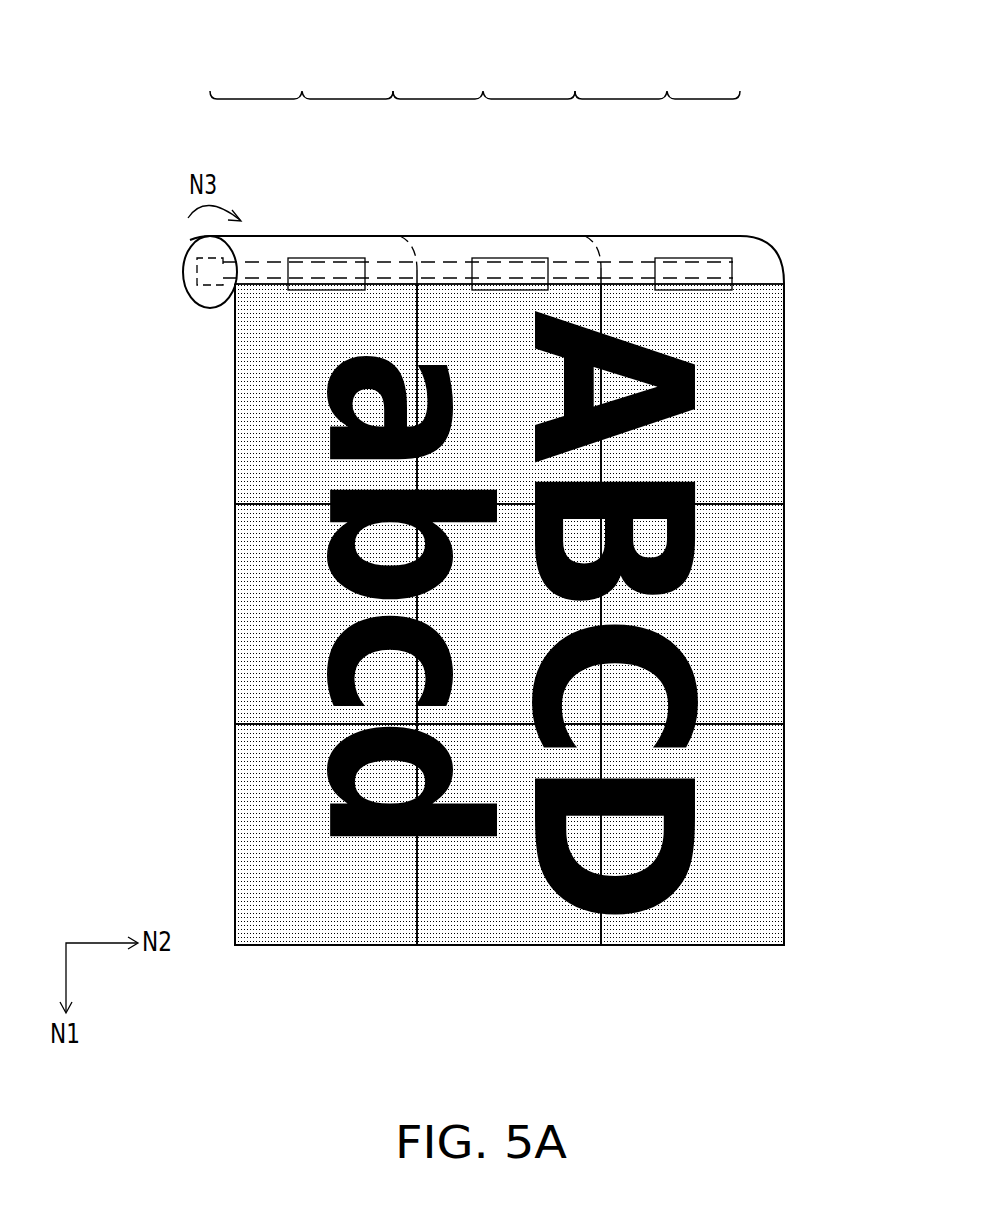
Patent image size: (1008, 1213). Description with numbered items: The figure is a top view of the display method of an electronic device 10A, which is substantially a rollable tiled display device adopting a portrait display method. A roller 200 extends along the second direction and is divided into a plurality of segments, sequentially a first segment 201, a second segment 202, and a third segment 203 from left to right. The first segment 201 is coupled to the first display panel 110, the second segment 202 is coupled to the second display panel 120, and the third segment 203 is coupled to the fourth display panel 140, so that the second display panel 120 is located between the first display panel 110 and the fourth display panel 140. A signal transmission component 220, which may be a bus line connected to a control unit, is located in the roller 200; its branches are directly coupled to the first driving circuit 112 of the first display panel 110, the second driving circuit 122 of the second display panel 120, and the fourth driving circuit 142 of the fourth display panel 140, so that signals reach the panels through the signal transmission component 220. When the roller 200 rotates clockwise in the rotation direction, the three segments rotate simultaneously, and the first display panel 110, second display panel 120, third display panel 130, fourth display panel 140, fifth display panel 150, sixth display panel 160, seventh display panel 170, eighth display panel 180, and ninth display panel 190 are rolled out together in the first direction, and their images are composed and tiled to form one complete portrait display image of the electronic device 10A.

The electronic device 10A is at (722, 932).
The first display panel 110 is at (235, 333).
The first driving circuit 112 is at (341, 258).
The second display panel 120 is at (575, 298).
The second driving circuit 122 is at (496, 258).
The third display panel 130 is at (260, 648).
The fourth display panel 140 is at (768, 352).
The fourth driving circuit 142 is at (696, 258).
The fifth display panel 150 is at (495, 637).
The sixth display panel 160 is at (260, 842).
The seventh display panel 170 is at (768, 578).
The eighth display panel 180 is at (562, 932).
The ninth display panel 190 is at (722, 932).
The roller 200 is at (185, 266).
The signal transmission component 220 is at (200, 252).
The first segment 201 is at (301, 78).
The second segment 202 is at (484, 78).
The third segment 203 is at (657, 78).